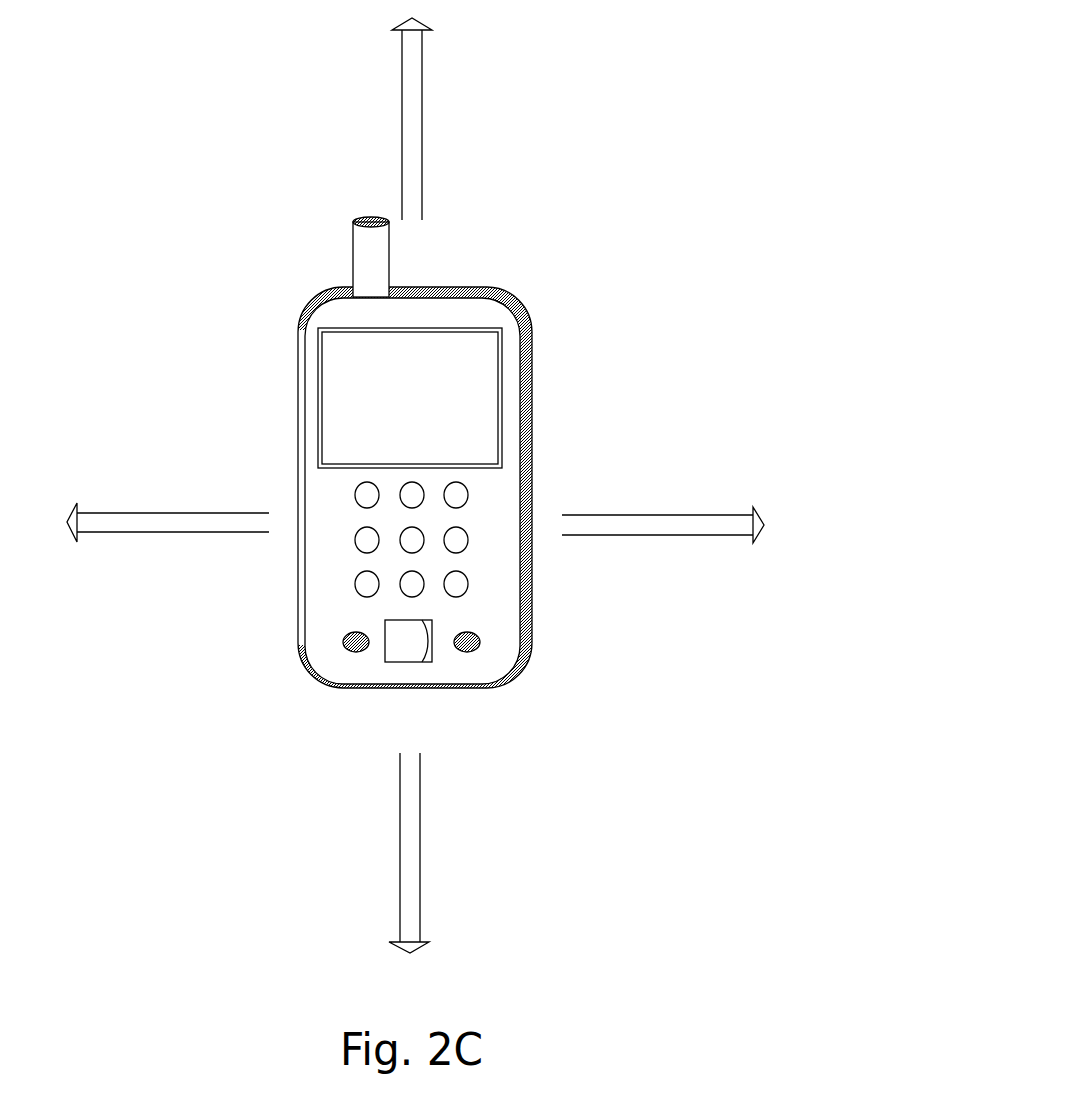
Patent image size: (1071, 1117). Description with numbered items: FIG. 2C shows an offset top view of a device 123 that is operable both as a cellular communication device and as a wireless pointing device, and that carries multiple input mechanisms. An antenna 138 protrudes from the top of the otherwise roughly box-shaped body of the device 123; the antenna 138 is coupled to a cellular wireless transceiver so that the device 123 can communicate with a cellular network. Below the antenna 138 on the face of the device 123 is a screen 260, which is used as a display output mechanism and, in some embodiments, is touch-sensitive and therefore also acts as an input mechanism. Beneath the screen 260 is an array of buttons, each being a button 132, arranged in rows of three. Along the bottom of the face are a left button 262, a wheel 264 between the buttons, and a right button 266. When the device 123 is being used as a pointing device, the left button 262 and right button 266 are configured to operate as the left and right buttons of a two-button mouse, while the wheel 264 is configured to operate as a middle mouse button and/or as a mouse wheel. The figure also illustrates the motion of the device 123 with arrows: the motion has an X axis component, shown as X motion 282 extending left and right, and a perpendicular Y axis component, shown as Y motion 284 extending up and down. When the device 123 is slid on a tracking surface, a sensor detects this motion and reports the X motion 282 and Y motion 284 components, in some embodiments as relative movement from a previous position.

The device 123 is at (532, 333).
The antenna 138 is at (353, 258).
The screen 260 is at (318, 377).
The button 132 is at (355, 585).
The left button 262 is at (345, 650).
The wheel 264 is at (413, 664).
The right button 266 is at (480, 650).
The X motion 282 is at (163, 512).
The Y motion 284 is at (422, 125).